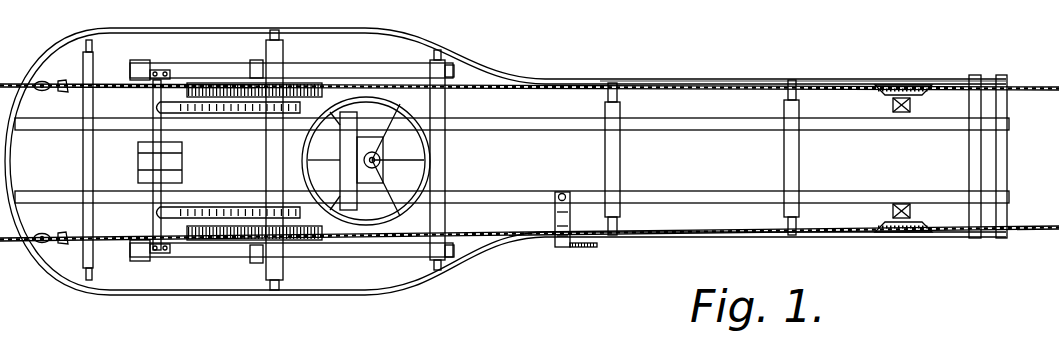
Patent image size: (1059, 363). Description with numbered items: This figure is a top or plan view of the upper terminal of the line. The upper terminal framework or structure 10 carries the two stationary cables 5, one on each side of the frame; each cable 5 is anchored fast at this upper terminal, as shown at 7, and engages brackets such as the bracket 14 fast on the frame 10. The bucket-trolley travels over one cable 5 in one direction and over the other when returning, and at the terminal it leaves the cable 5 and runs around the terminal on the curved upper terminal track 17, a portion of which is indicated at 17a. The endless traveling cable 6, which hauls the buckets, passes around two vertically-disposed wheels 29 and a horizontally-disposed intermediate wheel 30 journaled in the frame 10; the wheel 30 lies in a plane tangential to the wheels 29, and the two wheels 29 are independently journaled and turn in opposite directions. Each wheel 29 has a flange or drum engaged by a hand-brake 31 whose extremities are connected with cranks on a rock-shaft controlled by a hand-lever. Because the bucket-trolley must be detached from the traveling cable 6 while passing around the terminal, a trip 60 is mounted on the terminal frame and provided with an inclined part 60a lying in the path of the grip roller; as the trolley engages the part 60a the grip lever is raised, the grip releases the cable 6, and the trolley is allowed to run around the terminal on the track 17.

The stationary cable 5 is at (1028, 80).
The endless traveling cable 6 is at (105, 84).
The cable anchorage 7 is at (13, 82).
The upper terminal framework 10 is at (512, 196).
The bracket 14 is at (980, 238).
The upper terminal track 17 is at (207, 295).
The frame side member 17a is at (683, 80).
The vertically-disposed wheel 29 is at (310, 86).
The horizontally-disposed intermediate wheel 30 is at (413, 107).
The hand-brake 31 is at (236, 112).
The trip 60 is at (556, 246).
The inclined part 60a is at (595, 248).